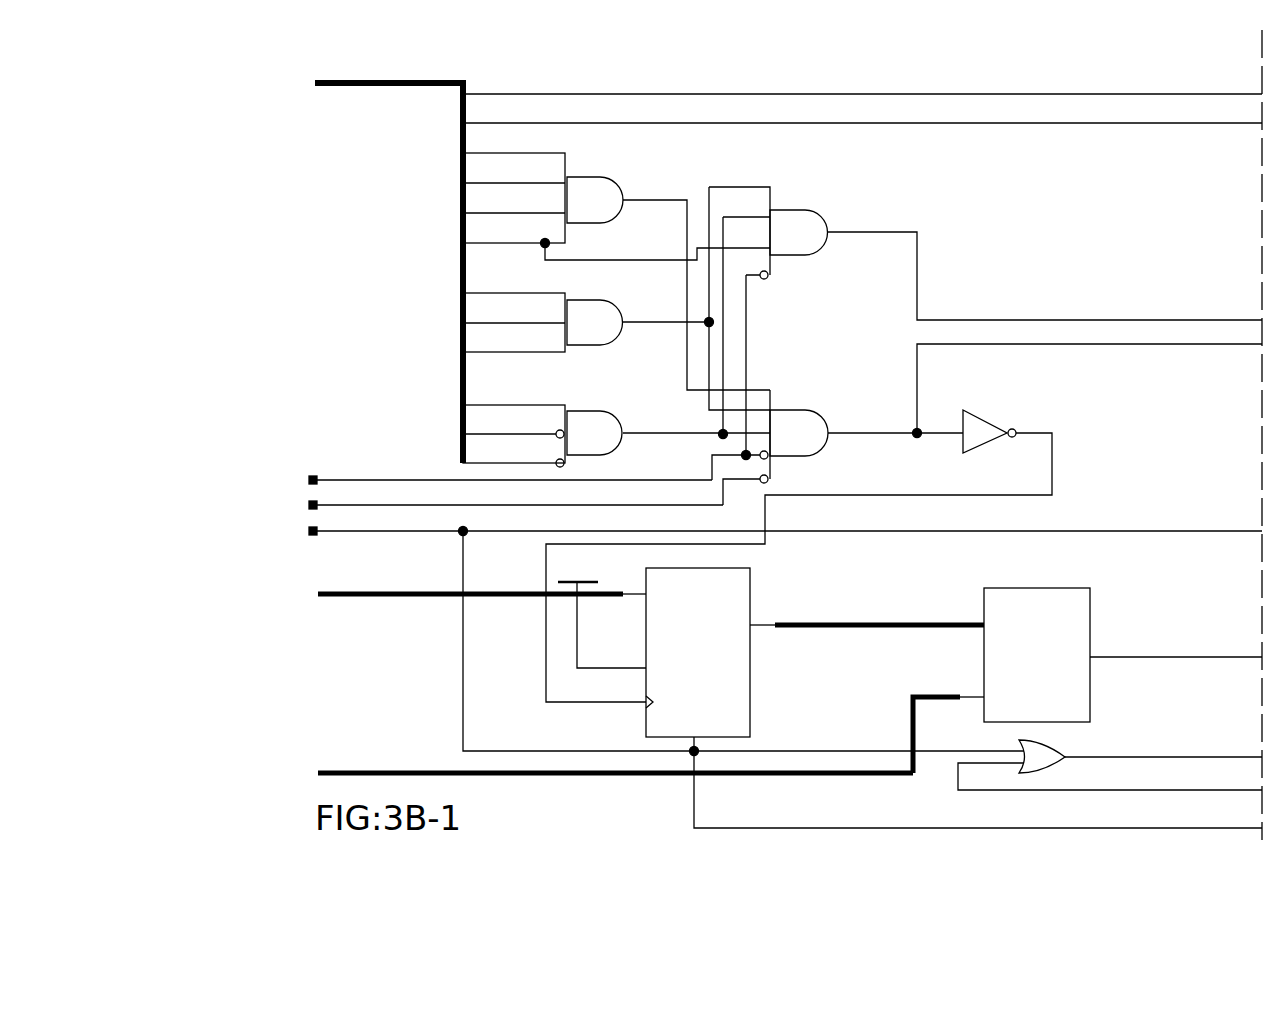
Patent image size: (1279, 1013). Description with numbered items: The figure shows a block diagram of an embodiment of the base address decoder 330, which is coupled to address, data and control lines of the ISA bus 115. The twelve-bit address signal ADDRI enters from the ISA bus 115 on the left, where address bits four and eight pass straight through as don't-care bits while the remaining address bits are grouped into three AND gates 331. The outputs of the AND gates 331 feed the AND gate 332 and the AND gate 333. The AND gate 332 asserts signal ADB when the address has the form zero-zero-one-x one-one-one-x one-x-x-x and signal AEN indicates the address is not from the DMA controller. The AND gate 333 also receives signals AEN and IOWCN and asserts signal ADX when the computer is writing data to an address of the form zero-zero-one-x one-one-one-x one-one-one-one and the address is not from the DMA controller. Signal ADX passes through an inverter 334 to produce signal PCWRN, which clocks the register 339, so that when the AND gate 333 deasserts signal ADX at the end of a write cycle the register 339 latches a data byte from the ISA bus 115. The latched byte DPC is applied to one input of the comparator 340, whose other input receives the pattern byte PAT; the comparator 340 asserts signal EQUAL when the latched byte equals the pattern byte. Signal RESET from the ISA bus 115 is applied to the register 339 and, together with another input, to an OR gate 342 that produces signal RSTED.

The ISA bus 115 is at (212, 73).
The base address decoder 330 is at (1033, 63).
The AND gates 331 is at (615, 418).
The AND gate 332 is at (818, 214).
The AND gate 333 is at (818, 417).
The inverter 334 is at (985, 414).
The register 339 is at (752, 604).
The comparator 340 is at (1034, 588).
The OR gate 342 is at (1045, 776).